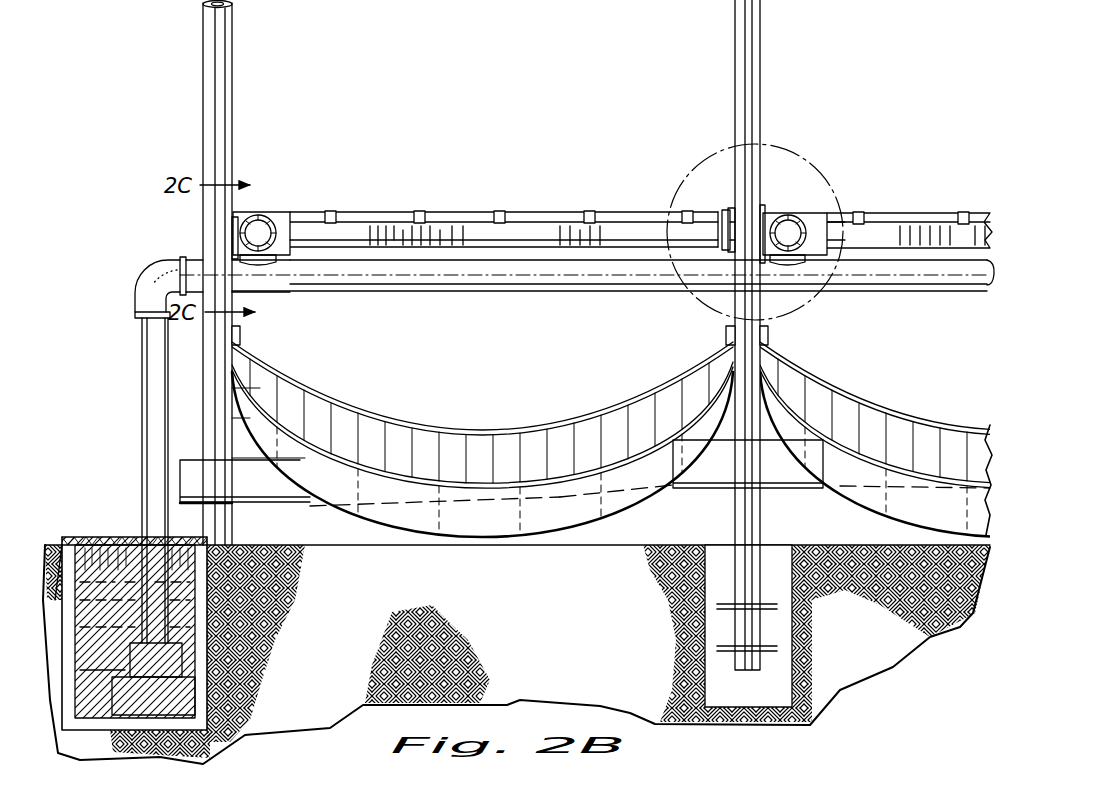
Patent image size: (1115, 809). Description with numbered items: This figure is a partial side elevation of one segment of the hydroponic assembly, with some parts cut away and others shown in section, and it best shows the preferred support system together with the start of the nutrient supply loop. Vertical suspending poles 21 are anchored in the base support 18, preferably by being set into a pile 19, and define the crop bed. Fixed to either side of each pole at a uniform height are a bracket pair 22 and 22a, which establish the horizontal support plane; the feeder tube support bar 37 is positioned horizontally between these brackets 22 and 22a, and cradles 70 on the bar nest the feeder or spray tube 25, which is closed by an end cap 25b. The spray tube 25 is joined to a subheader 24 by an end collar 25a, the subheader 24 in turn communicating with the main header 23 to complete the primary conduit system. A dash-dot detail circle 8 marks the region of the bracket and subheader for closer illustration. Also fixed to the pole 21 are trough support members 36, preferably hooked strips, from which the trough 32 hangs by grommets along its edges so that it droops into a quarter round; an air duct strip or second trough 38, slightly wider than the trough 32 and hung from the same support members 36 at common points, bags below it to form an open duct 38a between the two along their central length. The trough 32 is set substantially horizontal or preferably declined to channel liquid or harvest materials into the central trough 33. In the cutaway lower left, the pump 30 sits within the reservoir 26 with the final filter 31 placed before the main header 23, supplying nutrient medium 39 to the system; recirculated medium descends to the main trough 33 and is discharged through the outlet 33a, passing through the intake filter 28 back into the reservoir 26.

The detail circle of FIG. 8 is at (800, 170).
The base support 18 is at (872, 668).
The pile 19 is at (748, 695).
The suspending pole 21 is at (233, 97).
The bracket 22 is at (668, 262).
The bracket 22a is at (272, 212).
The main header 23 is at (170, 397).
The subheader 24 is at (266, 228).
The spray tube 25 is at (525, 222).
The end collar 25a is at (820, 237).
The cap end 25b is at (722, 215).
The reservoir 26 is at (215, 692).
The intake filter 28 is at (120, 537).
The pump 30 is at (165, 706).
The final filter 31 is at (139, 670).
The trough 32 is at (572, 430).
The central trough 33 is at (780, 490).
The outlet 33a is at (180, 466).
The trough support member 36 is at (243, 337).
The feeder tube support bar 37 is at (532, 245).
The air duct strip 38 is at (605, 522).
The open duct 38a is at (480, 493).
The nutrient medium 39 is at (190, 618).
The cradle 70 is at (332, 211).